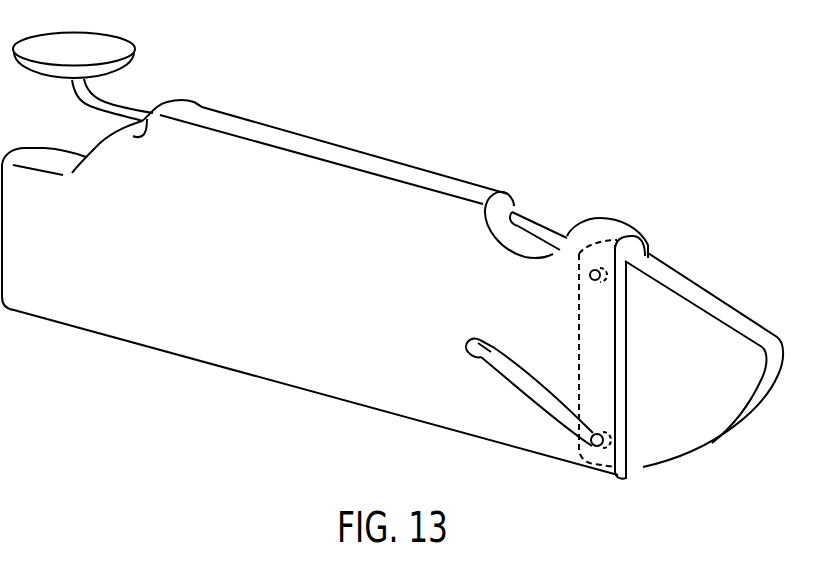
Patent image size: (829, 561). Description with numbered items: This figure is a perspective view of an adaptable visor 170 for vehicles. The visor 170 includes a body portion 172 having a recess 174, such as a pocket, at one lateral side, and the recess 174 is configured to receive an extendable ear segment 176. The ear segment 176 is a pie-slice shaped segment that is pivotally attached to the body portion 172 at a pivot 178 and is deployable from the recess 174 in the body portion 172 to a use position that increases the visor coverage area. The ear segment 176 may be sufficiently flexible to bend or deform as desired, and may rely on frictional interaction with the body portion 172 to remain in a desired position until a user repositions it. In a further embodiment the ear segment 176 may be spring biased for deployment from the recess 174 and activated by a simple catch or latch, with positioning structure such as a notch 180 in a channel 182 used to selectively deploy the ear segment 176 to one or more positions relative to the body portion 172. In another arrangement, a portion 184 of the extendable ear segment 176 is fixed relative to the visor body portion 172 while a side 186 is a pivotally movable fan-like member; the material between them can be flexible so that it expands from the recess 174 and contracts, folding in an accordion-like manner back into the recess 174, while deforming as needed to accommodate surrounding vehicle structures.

The visor 170 is at (392, 266).
The body portion 172 is at (320, 268).
The recess 174 is at (638, 243).
The ear segment 176 is at (698, 380).
The pivot 178 is at (588, 276).
The notch 180 is at (470, 347).
The channel 182 is at (545, 410).
The portion 184 is at (593, 341).
The side 186 is at (725, 312).